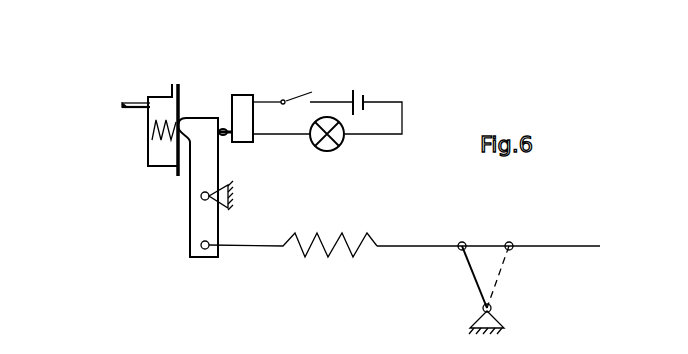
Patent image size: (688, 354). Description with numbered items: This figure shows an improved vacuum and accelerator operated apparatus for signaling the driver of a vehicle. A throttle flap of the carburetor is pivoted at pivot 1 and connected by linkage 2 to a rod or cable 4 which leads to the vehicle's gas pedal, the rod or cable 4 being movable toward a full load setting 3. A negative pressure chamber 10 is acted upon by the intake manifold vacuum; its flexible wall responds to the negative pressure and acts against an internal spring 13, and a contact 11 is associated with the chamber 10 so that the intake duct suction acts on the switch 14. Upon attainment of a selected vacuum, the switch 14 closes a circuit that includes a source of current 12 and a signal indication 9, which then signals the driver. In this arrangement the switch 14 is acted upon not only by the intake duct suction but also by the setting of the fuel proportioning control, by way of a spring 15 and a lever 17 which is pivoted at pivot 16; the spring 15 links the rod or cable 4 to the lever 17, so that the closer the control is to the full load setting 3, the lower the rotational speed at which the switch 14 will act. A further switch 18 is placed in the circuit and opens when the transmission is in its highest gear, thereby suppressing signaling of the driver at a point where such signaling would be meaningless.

The pivot 1 is at (483, 308).
The linkage 2 is at (462, 242).
The full load setting 3 is at (510, 242).
The rod or cable 4 is at (555, 246).
The signal indication 9 is at (338, 146).
The negative pressure chamber 10 is at (157, 97).
The chamber 11 is at (130, 108).
The source of current 12 is at (359, 90).
The internal spring 13 is at (160, 138).
The switch 14 is at (241, 100).
The spring 15 is at (346, 240).
The pivot 16 is at (201, 196).
The lever 17 is at (198, 233).
The switch 18 is at (298, 95).